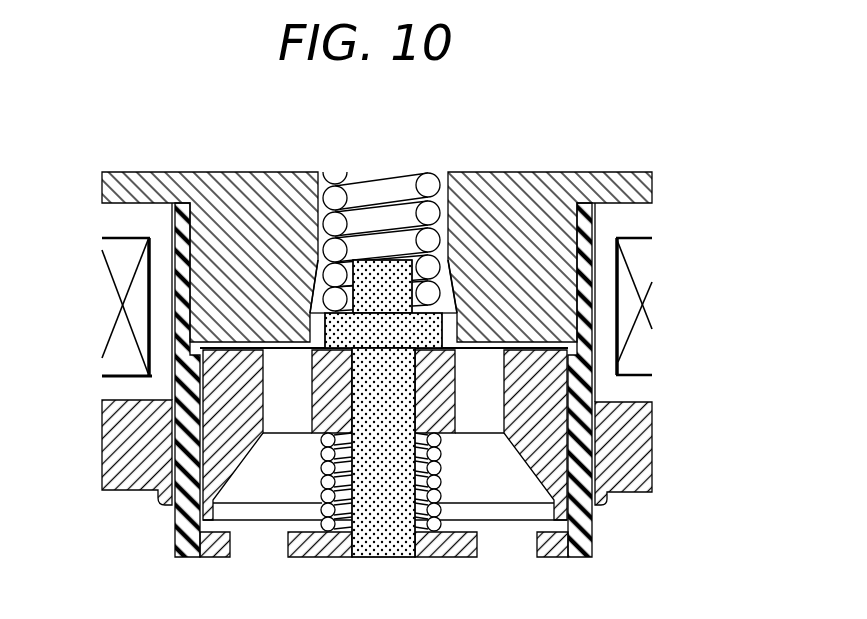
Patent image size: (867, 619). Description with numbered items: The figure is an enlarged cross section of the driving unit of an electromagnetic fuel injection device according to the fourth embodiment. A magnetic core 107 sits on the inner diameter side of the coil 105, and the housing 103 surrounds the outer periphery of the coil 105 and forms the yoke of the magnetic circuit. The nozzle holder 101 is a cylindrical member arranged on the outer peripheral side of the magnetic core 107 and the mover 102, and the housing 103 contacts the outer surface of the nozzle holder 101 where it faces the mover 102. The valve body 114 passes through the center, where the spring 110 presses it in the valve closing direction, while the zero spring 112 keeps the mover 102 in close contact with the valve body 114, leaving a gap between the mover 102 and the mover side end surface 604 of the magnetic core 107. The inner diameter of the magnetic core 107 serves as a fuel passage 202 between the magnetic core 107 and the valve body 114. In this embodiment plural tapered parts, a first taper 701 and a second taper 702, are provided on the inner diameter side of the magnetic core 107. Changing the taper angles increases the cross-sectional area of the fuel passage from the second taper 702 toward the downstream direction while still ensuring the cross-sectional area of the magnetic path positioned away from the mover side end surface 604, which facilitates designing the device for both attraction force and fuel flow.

The nozzle holder 101 is at (182, 532).
The mover 102 is at (258, 407).
The housing 103 is at (122, 447).
The coil 105 is at (120, 364).
The magnetic core 107 is at (555, 203).
The spring 110 is at (428, 187).
The zero spring 112 is at (432, 503).
The valve body 114 is at (373, 547).
The fuel passage 202 is at (460, 327).
The mover side end surface 604 is at (246, 338).
The first taper 701 is at (313, 288).
The second taper 702 is at (293, 331).